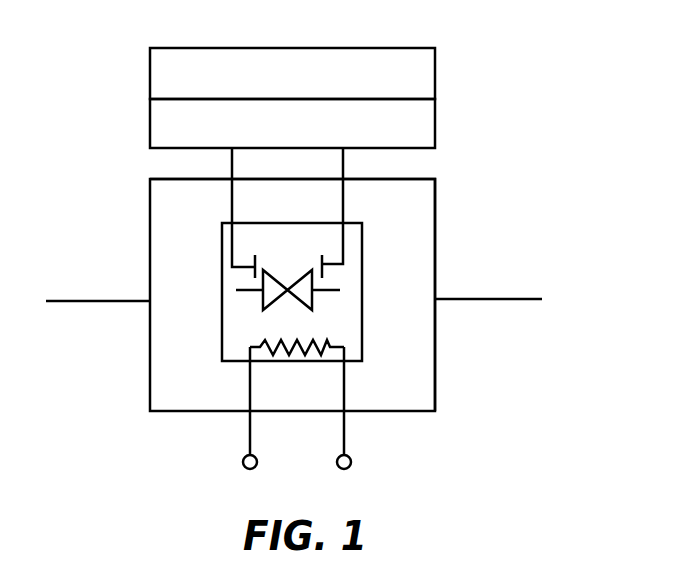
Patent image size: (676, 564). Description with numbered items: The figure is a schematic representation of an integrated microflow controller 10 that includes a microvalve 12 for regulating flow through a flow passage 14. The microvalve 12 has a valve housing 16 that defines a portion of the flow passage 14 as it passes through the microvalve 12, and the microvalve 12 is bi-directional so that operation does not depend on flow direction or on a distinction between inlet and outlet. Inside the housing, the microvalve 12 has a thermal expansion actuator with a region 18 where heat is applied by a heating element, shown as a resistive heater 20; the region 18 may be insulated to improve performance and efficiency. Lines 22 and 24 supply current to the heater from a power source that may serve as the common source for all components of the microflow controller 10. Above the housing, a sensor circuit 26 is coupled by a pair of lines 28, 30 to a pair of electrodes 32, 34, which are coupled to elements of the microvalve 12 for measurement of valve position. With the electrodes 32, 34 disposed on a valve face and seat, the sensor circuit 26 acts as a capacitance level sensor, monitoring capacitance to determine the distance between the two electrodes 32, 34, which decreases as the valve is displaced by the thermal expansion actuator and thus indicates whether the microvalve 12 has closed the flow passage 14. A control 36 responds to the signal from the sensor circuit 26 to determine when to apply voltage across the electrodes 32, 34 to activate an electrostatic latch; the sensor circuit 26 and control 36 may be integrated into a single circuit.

The integrated microflow controller 10 is at (540, 101).
The microvalve 12 is at (435, 392).
The flow passage 14 is at (88, 301).
The valve housing 16 is at (435, 195).
The region 18 is at (222, 347).
The resistive heater 20 is at (322, 343).
The line 22 is at (250, 433).
The line 24 is at (344, 433).
The sensor circuit 26 is at (150, 134).
The line 28 is at (232, 158).
The line 30 is at (343, 167).
The electrode 32 is at (258, 263).
The electrode 34 is at (325, 271).
The control 36 is at (435, 55).